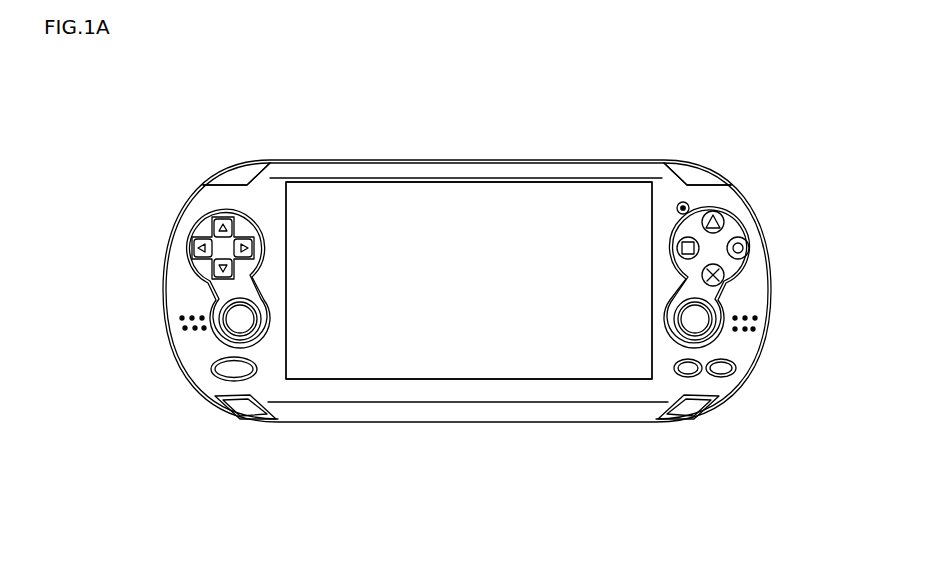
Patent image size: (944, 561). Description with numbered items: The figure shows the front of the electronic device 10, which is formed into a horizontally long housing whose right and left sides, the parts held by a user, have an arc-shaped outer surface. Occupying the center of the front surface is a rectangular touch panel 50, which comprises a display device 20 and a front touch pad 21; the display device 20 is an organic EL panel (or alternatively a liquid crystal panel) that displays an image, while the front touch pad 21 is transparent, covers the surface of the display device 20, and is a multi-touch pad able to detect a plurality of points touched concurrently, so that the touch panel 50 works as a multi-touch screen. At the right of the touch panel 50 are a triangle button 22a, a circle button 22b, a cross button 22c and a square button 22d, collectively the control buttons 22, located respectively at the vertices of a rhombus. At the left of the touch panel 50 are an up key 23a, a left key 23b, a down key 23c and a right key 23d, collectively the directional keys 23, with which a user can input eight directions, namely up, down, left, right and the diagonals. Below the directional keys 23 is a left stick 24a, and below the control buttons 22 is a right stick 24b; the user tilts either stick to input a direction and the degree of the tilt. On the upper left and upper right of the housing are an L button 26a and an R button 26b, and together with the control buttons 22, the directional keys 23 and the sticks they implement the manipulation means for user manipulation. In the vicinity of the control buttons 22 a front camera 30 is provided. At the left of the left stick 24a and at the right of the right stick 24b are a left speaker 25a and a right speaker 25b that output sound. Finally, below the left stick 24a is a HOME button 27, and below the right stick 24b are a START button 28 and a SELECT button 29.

The electronic device 10 is at (478, 544).
The display device 20 is at (465, 197).
The front touch pad 21 is at (469, 280).
The touch panel 50 is at (469, 225).
The control buttons 22 is at (771, 268).
The triangle button 22a is at (719, 224).
The circle button 22b is at (741, 248).
The cross button 22c is at (718, 277).
The square button 22d is at (694, 250).
The directional keys 23 is at (163, 268).
The up key 23a is at (218, 228).
The left key 23b is at (203, 248).
The down key 23c is at (246, 252).
The right key 23d is at (222, 268).
The left stick 24a is at (240, 327).
The right stick 24b is at (720, 332).
The left speaker 25a is at (178, 326).
The right speaker 25b is at (758, 325).
The L button 26a is at (238, 176).
The R button 26b is at (698, 176).
The HOME button 27 is at (225, 371).
The START button 28 is at (737, 370).
The SELECT button 29 is at (689, 374).
The front camera 30 is at (681, 202).